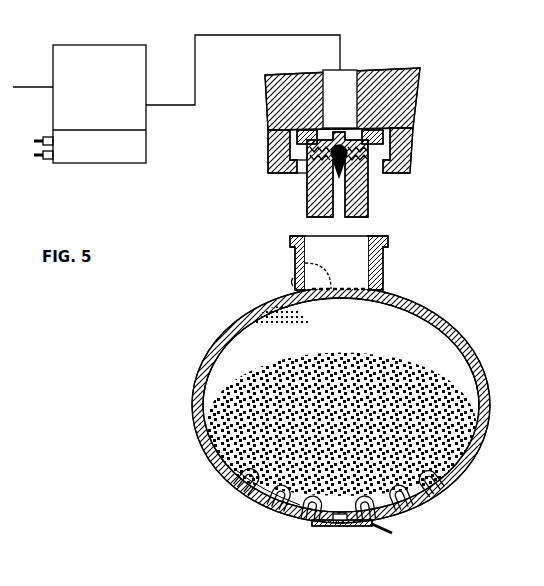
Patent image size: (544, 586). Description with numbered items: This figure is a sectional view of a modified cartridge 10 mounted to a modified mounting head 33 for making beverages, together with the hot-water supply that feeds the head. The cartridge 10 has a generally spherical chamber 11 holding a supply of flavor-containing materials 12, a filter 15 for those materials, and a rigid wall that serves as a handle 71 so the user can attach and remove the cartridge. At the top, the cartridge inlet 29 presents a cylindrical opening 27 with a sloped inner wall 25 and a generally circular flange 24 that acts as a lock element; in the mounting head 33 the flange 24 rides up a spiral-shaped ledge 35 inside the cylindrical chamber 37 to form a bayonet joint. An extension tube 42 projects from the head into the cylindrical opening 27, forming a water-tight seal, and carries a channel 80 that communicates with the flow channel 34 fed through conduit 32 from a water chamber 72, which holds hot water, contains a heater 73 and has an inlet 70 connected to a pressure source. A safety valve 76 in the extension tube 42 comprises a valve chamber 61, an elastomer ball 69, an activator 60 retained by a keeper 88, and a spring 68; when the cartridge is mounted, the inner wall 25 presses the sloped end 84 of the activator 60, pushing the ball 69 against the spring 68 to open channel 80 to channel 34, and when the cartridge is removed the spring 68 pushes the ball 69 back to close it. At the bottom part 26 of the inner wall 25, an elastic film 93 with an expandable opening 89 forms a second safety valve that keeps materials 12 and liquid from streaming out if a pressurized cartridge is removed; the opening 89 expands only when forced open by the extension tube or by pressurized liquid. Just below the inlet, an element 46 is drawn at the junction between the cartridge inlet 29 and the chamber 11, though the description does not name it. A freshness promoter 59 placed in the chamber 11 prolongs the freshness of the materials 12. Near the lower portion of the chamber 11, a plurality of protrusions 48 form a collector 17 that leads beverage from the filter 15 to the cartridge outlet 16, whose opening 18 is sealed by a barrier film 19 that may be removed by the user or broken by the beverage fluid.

The cartridge 10 is at (490, 326).
The spherical chamber 11 is at (452, 340).
The flavor-containing materials 12 is at (455, 430).
The filter 15 is at (466, 470).
The cartridge outlet 16 is at (376, 538).
The collector 17 is at (318, 520).
The opening 18 is at (336, 528).
The barrier film 19 is at (350, 528).
The flange 24 is at (290, 240).
The inner wall 25 is at (305, 262).
The bottom part 26 is at (360, 284).
The cylindrical opening 27 is at (387, 242).
The cartridge inlet 29 is at (400, 272).
The conduit 32 is at (194, 72).
The mounting head 33 is at (428, 78).
The flow channel 34 is at (330, 92).
The spiral-shaped ledge 35 is at (405, 170).
The cylindrical chamber 37 is at (293, 172).
The extension tube 42 is at (365, 196).
The screen 46 is at (357, 292).
The protrusions 48 is at (262, 510).
The freshness promoter 59 is at (248, 330).
The activator 60 is at (286, 133).
The valve chamber 61 is at (410, 116).
The spring 68 is at (392, 135).
The elastomer ball 69 is at (398, 152).
The inlet 70 is at (33, 87).
The handle 71 is at (484, 380).
The water chamber 72 is at (110, 97).
The heater 73 is at (45, 162).
The safety valve 76 is at (306, 168).
The channel 80 is at (362, 174).
The sloped end 84 is at (290, 147).
The keeper 88 is at (330, 156).
The expandable opening 89 is at (333, 284).
The elastic film 93 is at (292, 278).